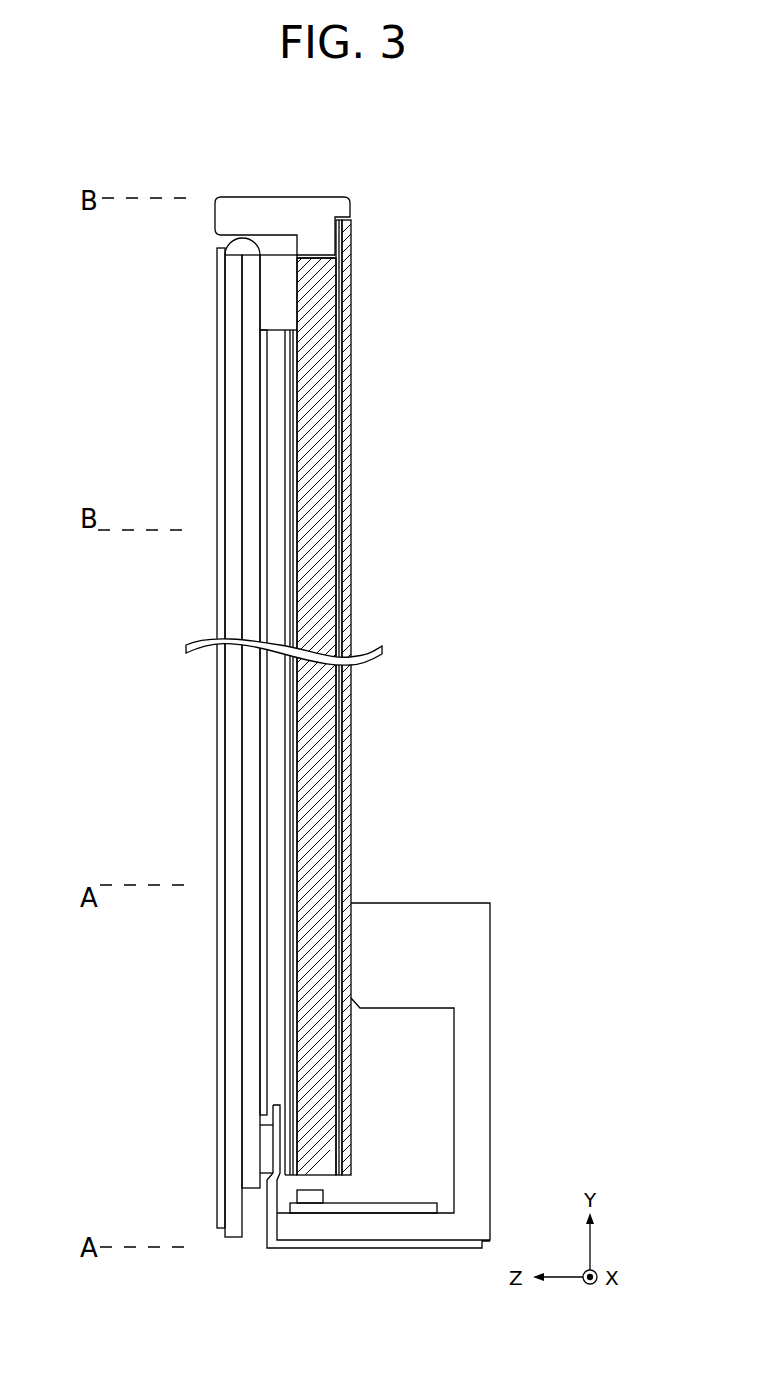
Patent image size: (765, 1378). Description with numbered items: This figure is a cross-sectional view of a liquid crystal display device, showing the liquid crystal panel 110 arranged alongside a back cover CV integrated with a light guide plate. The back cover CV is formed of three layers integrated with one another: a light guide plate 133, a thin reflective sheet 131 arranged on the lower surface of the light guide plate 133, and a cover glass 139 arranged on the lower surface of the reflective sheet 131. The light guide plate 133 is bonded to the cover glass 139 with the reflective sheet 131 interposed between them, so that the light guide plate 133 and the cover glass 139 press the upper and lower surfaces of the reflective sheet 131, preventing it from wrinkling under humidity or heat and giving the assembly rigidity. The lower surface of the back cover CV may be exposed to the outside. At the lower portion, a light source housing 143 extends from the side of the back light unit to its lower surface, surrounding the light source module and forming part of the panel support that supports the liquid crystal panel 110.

The liquid crystal panel 110 is at (219, 738).
The light guide plate 133 is at (320, 703).
The reflective sheet 131 is at (340, 737).
The cover glass 139 is at (355, 766).
The light source housing 143 is at (478, 937).
The back cover integrated with a light guide plate CV is at (393, 701).